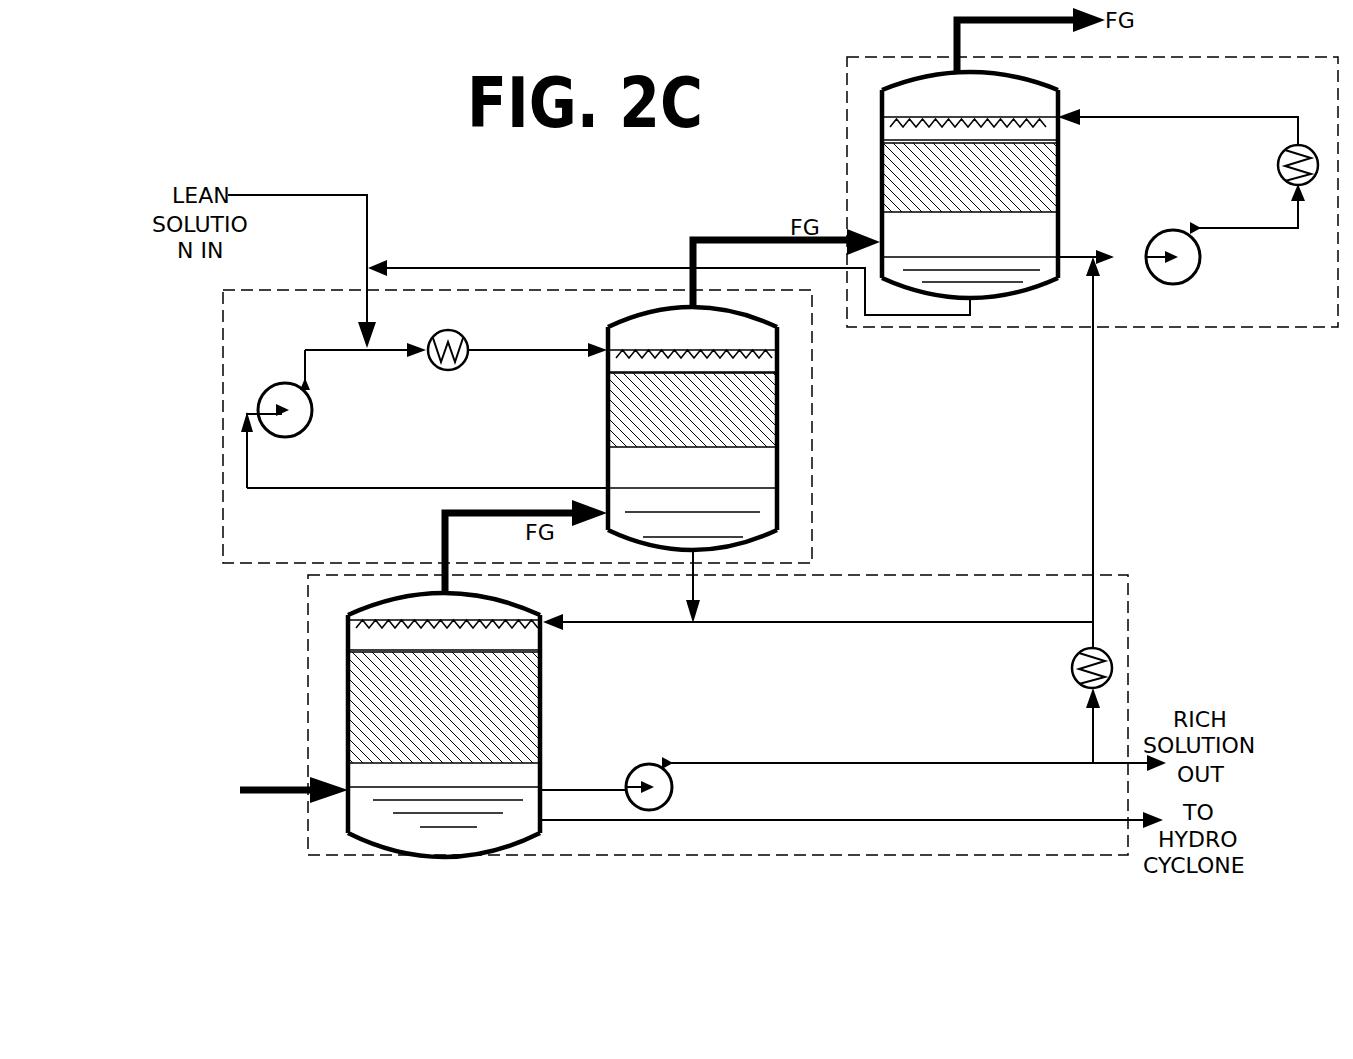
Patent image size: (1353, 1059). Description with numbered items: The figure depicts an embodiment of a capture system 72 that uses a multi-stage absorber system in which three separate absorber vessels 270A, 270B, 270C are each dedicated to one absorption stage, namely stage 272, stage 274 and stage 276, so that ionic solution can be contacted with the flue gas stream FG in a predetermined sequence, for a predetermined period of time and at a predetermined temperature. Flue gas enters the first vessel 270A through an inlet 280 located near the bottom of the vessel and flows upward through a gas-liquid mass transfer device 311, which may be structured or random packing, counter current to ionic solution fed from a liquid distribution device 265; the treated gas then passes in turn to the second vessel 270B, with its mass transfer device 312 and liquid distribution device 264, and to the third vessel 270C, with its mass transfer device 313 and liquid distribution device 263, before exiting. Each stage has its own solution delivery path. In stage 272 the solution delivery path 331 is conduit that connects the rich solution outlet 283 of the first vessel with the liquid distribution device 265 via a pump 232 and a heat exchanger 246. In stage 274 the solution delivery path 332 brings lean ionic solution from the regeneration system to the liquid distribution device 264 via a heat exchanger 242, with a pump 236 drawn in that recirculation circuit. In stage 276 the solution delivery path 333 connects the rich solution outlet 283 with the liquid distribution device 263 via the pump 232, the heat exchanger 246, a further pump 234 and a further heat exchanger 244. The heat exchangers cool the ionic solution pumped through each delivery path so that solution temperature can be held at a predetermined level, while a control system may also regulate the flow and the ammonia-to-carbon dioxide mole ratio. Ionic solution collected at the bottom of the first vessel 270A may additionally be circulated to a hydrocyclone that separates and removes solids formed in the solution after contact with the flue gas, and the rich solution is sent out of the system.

The capture system 72 is at (430, 132).
The absorber vessel 270C is at (882, 118).
The liquid distribution device 263 is at (1022, 117).
The mass transfer device 313 is at (1035, 173).
The heat exchanger 244 is at (1277, 163).
The pump 234 is at (1185, 253).
The solution delivery path 333 is at (1160, 156).
The absorption stage 276 is at (836, 175).
The absorber vessel 270B is at (607, 330).
The liquid distribution device 264 is at (720, 350).
The mass transfer device 312 is at (755, 398).
The heat exchanger 242 is at (430, 375).
The pump 236 is at (310, 427).
The solution delivery path 332 is at (444, 402).
The absorption stage 274 is at (233, 354).
The absorber vessel 270A is at (348, 615).
The liquid distribution device 265 is at (513, 622).
The mass transfer device 311 is at (520, 693).
The rich solution outlet 283 is at (553, 780).
The pump 232 is at (673, 780).
The inlet 280 is at (295, 795).
The heat exchanger 246 is at (1110, 658).
The solution delivery path 331 is at (936, 680).
The absorption stage 272 is at (290, 635).